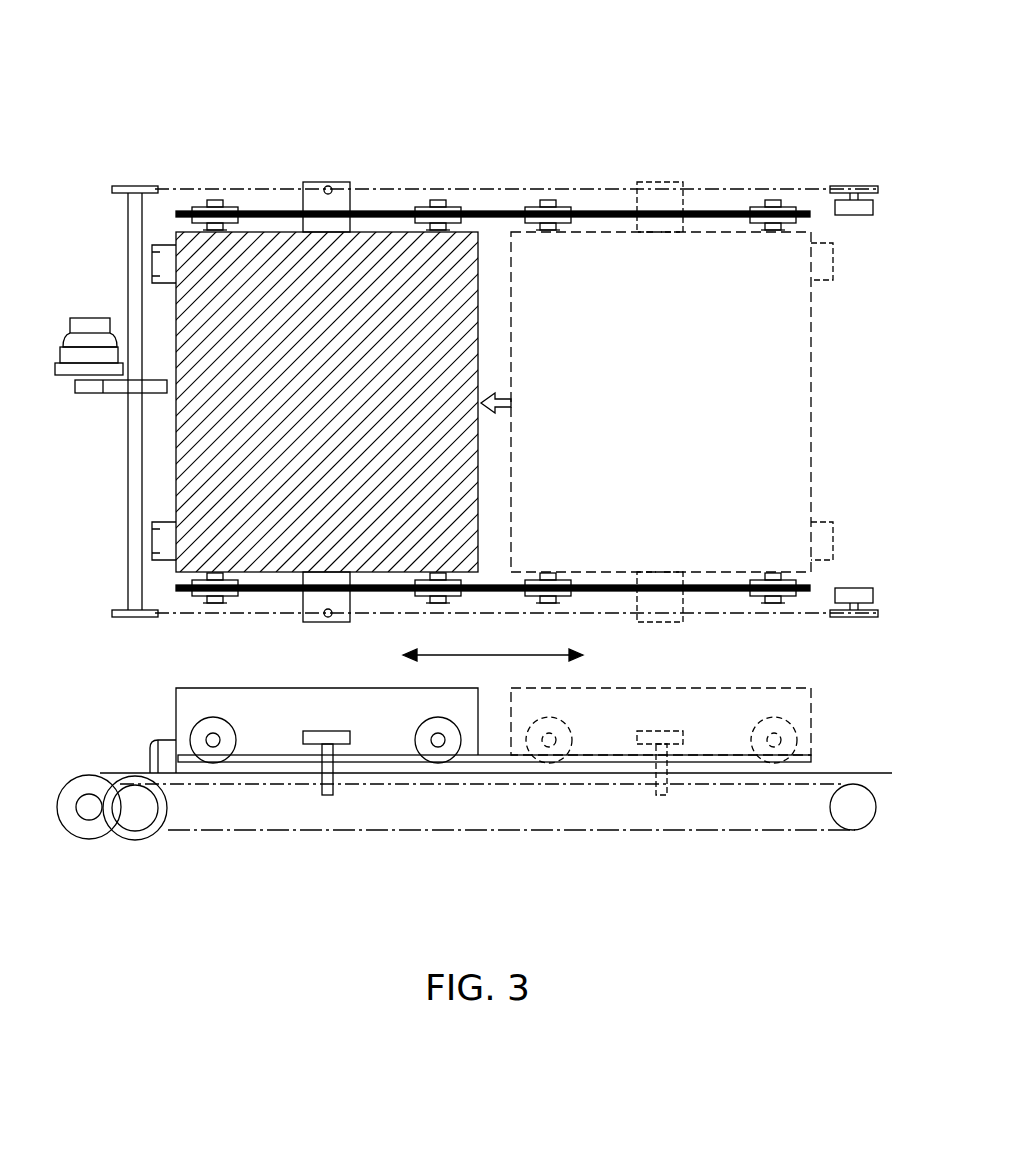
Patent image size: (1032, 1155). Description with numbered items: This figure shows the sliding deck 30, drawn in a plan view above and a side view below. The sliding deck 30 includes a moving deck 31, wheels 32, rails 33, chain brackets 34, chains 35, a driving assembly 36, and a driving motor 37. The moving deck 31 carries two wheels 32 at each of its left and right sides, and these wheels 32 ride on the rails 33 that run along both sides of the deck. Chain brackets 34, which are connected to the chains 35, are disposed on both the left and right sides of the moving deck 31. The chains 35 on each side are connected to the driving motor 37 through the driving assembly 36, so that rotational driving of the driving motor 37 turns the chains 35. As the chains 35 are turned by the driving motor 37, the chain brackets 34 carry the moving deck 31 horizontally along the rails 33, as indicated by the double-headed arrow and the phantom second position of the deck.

The sliding deck 30 is at (857, 62).
The moving deck 31 is at (185, 212).
The wheels 32 is at (214, 717).
The rails 33 is at (370, 210).
The chain brackets 34 is at (328, 186).
The chains 35 is at (483, 202).
The driving assembly 36 is at (118, 394).
The driving motor 37 is at (90, 318).